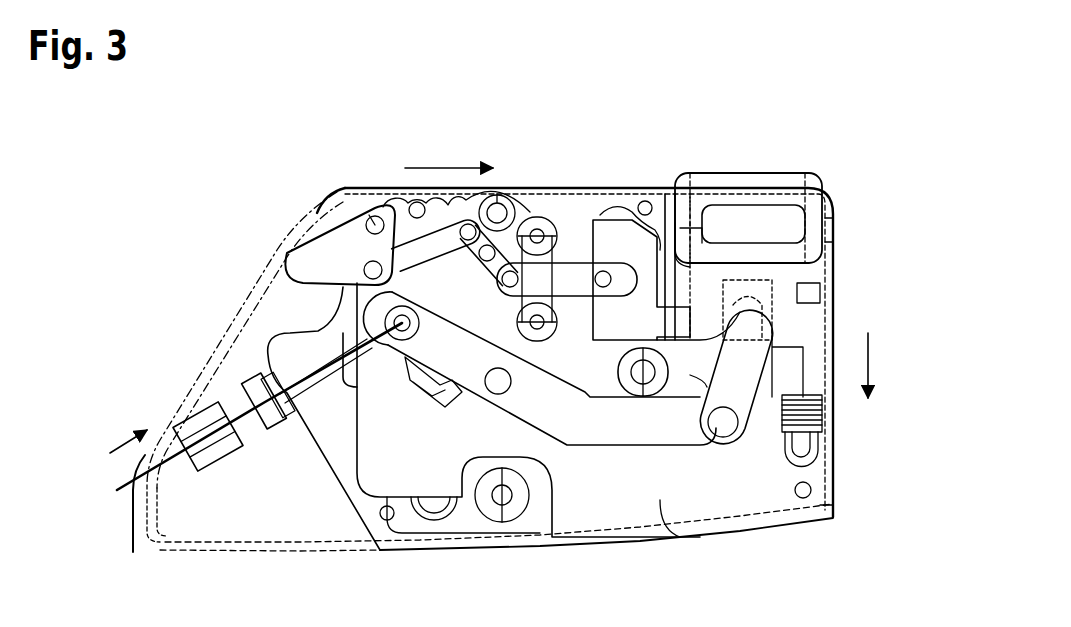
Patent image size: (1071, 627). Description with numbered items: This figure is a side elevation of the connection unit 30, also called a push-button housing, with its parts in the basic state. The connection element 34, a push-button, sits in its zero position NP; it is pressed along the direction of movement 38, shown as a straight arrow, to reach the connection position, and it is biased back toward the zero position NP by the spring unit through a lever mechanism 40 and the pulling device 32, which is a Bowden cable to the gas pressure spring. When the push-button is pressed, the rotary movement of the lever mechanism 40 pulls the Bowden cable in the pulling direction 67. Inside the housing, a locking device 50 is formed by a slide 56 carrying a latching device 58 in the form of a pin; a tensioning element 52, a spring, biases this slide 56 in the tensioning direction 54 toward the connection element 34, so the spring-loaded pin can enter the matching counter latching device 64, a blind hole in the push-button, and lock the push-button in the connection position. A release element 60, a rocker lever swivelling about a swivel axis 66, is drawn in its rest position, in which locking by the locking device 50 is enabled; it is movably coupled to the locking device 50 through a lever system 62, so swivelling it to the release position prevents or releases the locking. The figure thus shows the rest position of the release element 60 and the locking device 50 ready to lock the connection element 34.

The connection unit 30 is at (348, 187).
The pulling device 32 is at (133, 530).
The connection element 34 is at (787, 173).
The direction of movement 38 is at (868, 365).
The lever mechanism 40 is at (673, 340).
The locking device 50 is at (615, 198).
The tensioning element 52 is at (582, 262).
The tensioning direction 54 is at (450, 167).
The slide 56 is at (590, 345).
The latching device 58 is at (660, 305).
The release element 60 is at (317, 222).
The lever system 62 is at (515, 218).
The counter latching device 64 is at (665, 270).
The swivel axis 66 is at (375, 222).
The pulling direction 67 is at (122, 440).
The zero position NP is at (838, 170).